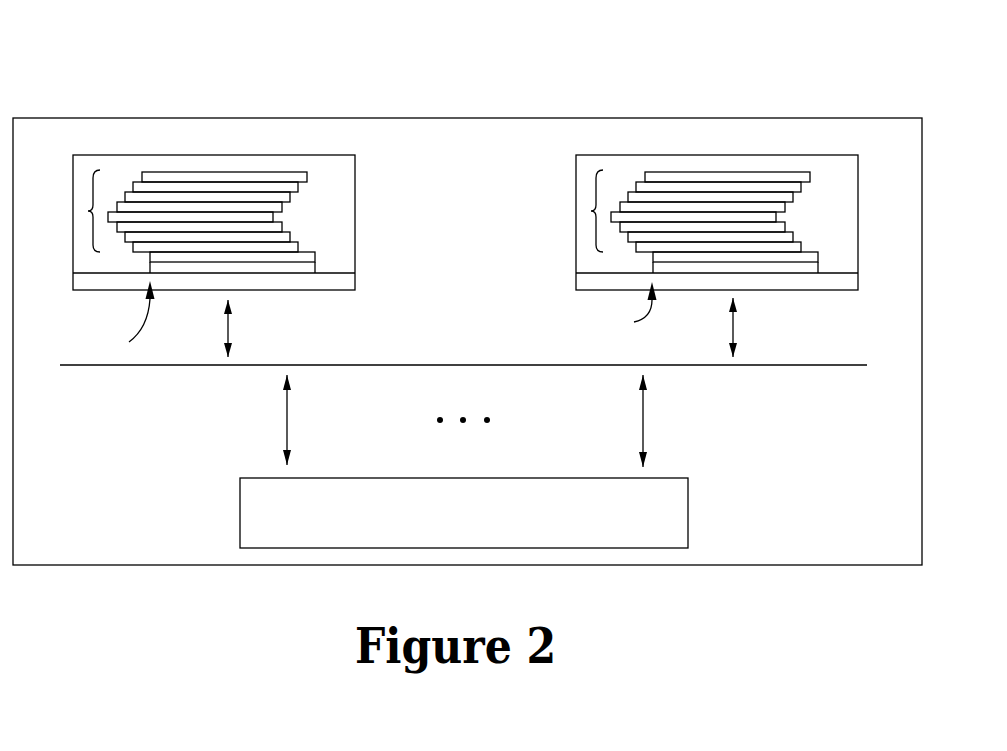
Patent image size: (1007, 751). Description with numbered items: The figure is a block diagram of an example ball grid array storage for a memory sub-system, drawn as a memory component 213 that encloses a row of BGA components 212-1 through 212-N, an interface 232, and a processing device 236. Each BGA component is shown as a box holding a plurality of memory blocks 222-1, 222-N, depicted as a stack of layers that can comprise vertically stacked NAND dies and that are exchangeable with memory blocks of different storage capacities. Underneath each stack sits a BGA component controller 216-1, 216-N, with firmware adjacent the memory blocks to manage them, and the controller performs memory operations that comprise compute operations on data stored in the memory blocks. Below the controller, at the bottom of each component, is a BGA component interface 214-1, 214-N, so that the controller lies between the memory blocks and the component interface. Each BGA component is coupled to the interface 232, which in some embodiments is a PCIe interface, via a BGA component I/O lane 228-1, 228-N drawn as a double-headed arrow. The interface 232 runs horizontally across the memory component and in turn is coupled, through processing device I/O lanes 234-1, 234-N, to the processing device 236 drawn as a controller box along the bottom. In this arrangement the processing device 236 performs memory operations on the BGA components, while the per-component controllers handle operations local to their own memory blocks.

The memory component 213 is at (130, 71).
The BGA component 212-1 is at (380, 189).
The BGA component 212-N is at (555, 180).
The plurality of memory blocks 222-1 is at (88, 211).
The plurality of memory blocks 222-N is at (591, 211).
The BGA component controller 216-1 is at (150, 266).
The BGA component controller 216-N is at (652, 268).
The BGA component interface 214-1 is at (115, 319).
The BGA component interface 214-N is at (615, 310).
The BGA component I/O lane 228-1 is at (250, 327).
The BGA component I/O lane 228-N is at (757, 327).
The interface 232 is at (455, 352).
The processing device I/O lane 234-1 is at (285, 421).
The processing device I/O lane 234-N is at (645, 422).
The processing device 236 is at (220, 510).